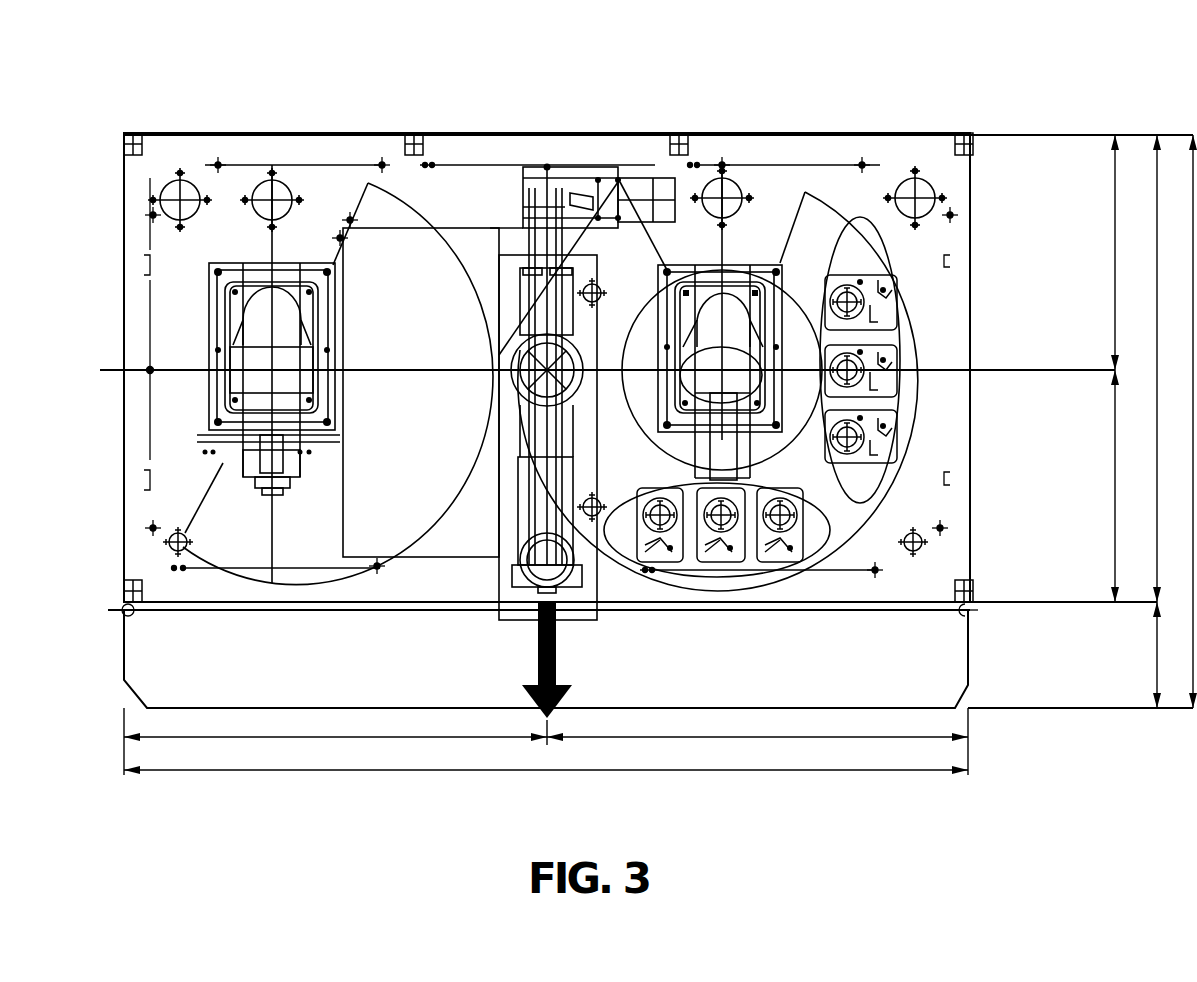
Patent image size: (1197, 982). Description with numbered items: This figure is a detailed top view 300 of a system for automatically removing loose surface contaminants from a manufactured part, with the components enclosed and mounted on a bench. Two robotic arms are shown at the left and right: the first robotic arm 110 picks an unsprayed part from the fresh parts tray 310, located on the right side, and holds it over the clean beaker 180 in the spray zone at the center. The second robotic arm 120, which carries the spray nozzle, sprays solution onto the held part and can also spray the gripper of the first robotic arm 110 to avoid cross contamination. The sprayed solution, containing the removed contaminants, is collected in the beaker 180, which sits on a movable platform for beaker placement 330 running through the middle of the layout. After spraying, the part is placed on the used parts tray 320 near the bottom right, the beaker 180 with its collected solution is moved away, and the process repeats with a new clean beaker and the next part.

The first robotic arm 110 is at (271, 330).
The second robotic arm 120 is at (724, 312).
The collection component (beaker) 180 is at (507, 419).
The detailed top view 300 is at (1085, 74).
The fresh parts tray 310 is at (930, 335).
The used parts tray 320 is at (712, 588).
The movable platform for beaker placement 330 is at (549, 492).